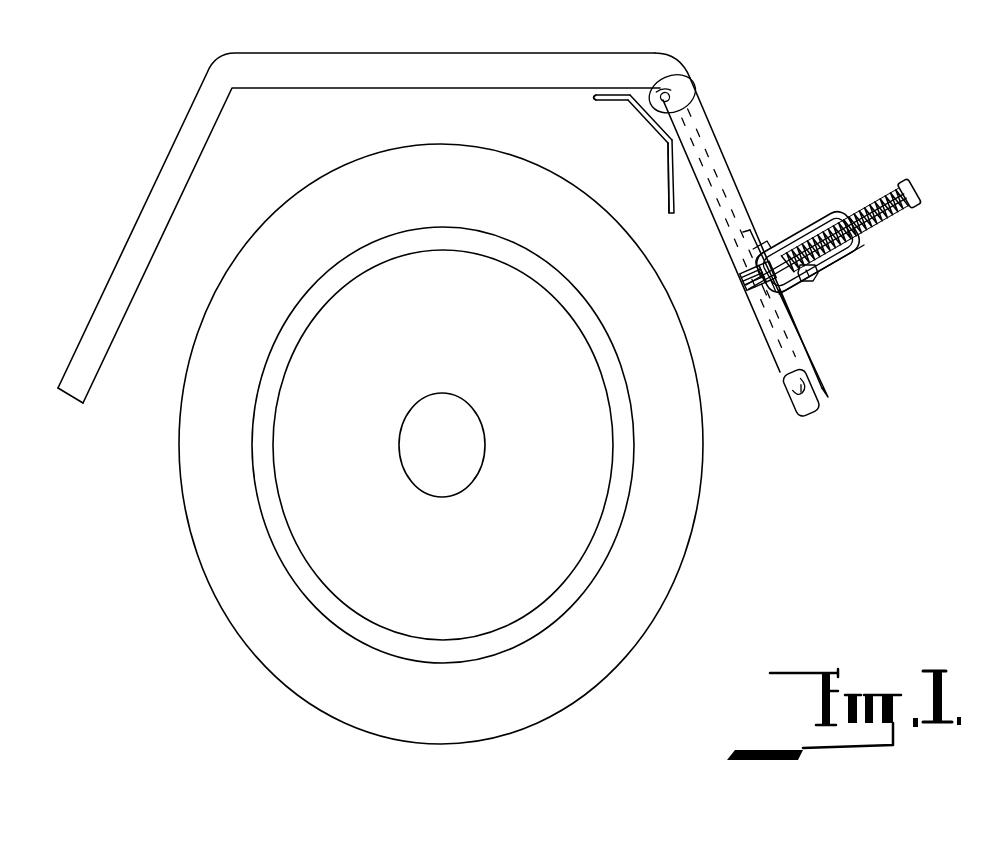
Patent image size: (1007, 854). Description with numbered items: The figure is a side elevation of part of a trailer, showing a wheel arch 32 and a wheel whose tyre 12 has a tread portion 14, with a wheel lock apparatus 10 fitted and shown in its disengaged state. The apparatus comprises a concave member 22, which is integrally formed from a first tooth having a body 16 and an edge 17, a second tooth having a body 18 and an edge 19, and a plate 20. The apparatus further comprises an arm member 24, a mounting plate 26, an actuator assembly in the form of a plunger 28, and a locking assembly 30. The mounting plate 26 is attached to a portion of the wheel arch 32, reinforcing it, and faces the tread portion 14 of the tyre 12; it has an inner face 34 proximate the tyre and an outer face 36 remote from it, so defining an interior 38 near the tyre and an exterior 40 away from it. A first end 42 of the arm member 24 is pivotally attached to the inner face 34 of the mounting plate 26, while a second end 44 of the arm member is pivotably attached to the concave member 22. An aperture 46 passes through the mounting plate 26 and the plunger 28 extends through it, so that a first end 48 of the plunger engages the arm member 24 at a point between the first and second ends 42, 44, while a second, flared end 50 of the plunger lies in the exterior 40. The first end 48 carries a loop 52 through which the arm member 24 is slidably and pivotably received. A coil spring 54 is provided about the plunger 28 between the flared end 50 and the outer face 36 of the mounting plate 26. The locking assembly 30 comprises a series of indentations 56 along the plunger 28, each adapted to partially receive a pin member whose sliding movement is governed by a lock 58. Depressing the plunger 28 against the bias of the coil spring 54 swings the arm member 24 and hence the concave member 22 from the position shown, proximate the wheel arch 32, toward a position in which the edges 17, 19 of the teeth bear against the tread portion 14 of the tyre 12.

The wheel lock apparatus 10 is at (931, 160).
The tyre 12 is at (676, 580).
The tread portion 14 is at (703, 500).
The body of first tooth 16 is at (602, 101).
The edge of first tooth 17 is at (587, 102).
The body of second tooth 18 is at (673, 186).
The edge of second tooth 19 is at (668, 178).
The plate 20 is at (653, 126).
The concave member 22 is at (587, 98).
The arm member 24 is at (780, 332).
The mounting plate 26 is at (823, 367).
The plunger 28 is at (840, 209).
The locking assembly 30 is at (822, 296).
The wheel arch 32 is at (686, 72).
The inner face 34 is at (781, 308).
The outer face 36 is at (813, 345).
The interior 38 is at (729, 289).
The exterior 40 is at (760, 183).
The first end of arm member 42 is at (807, 414).
The second end of arm member 44 is at (702, 99).
The aperture 46 is at (772, 261).
The first end of plunger 48 is at (743, 295).
The flared end 50 is at (923, 198).
The loop 52 is at (750, 280).
The coil spring 54 is at (879, 220).
The indentations 56 is at (814, 213).
The lock 58 is at (826, 274).